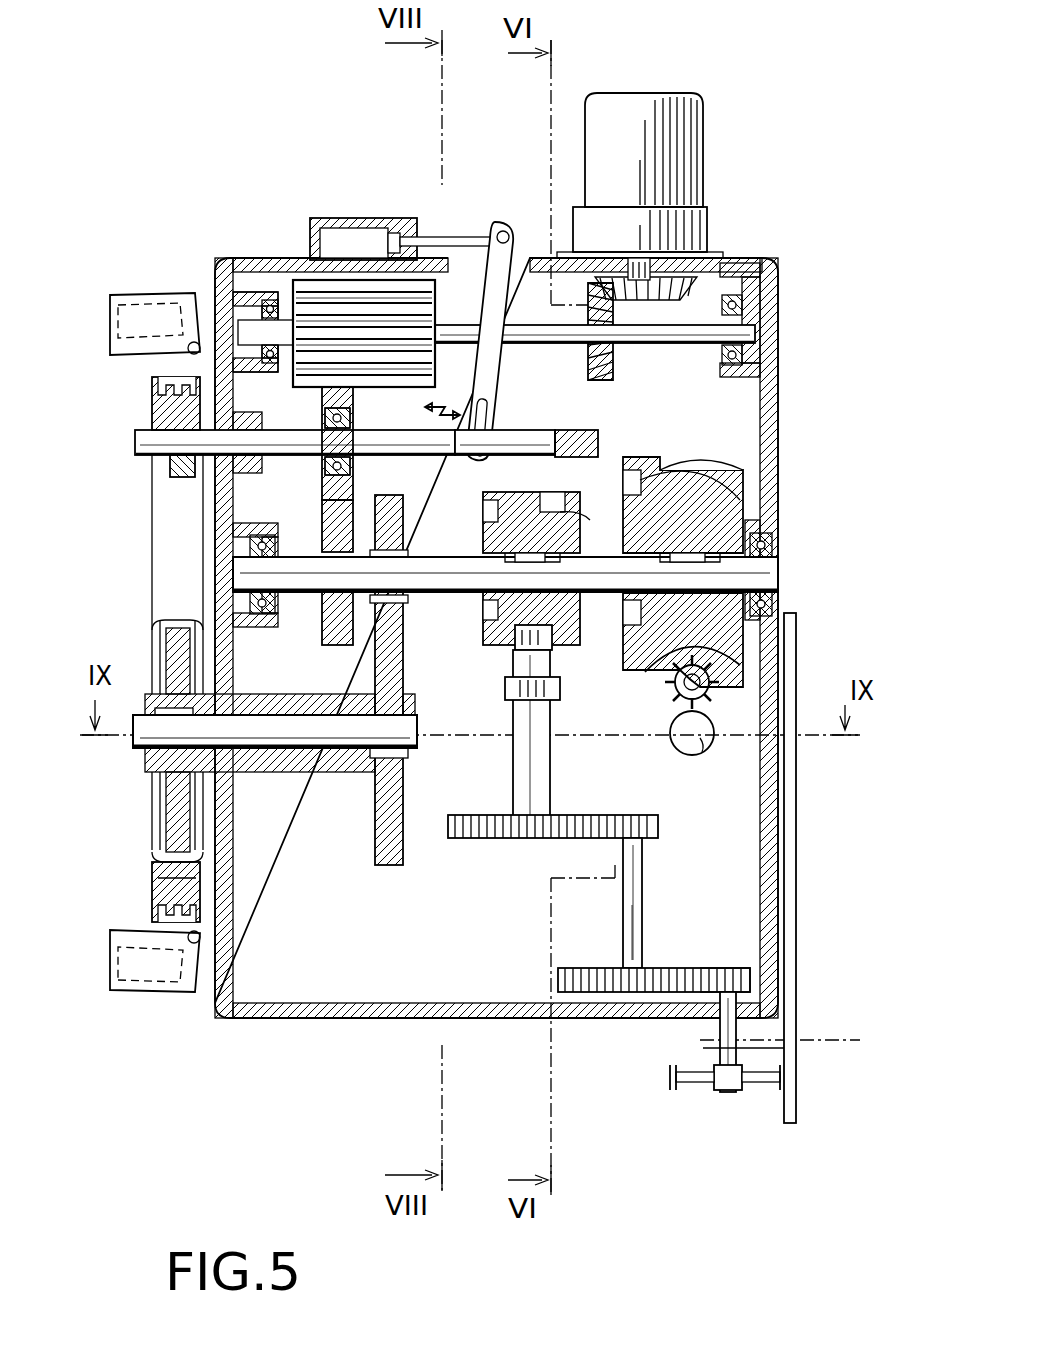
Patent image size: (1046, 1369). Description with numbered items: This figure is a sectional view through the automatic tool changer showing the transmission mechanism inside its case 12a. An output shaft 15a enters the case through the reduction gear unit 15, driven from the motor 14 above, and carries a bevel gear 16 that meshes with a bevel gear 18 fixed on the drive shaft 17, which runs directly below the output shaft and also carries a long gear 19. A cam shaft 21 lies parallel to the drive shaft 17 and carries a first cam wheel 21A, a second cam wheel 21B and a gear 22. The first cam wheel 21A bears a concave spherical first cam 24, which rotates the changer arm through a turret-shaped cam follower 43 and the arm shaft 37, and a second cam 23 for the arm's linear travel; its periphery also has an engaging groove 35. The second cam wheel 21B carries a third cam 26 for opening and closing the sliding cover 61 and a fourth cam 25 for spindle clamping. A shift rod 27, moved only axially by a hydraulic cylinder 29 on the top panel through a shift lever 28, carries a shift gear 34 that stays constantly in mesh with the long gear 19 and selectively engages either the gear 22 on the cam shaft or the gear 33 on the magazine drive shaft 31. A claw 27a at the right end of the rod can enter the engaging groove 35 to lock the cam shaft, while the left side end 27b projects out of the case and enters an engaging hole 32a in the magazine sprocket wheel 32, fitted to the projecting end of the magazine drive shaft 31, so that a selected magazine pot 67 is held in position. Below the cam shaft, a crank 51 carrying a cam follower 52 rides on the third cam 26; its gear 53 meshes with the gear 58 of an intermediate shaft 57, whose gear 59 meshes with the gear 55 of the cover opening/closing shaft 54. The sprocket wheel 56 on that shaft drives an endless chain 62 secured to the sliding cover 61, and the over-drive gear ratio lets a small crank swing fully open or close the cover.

The case 12a is at (772, 376).
The motor 14 is at (690, 115).
The reduction gear unit 15 is at (680, 215).
The output shaft 15a is at (600, 265).
The bevel gear 16 is at (690, 270).
The drive shaft 17 is at (750, 325).
The bevel gear 18 is at (590, 320).
The long gear 19 is at (318, 300).
The cam shaft 21 is at (750, 572).
The first cam wheel 21A is at (760, 520).
The second cam wheel 21B is at (590, 520).
The gear 22 is at (330, 620).
The second cam 23 is at (720, 525).
The first cam 24 is at (705, 458).
The fourth cam 25 is at (485, 630).
The third cam 26 is at (490, 500).
The shift rod 27 is at (532, 440).
The claw 27a is at (598, 452).
The left side end 27b is at (150, 445).
The shift lever 28 is at (502, 224).
The hydraulic cylinder 29 is at (360, 218).
The magazine drive shaft 31 is at (316, 745).
The magazine sprocket wheel 32 is at (155, 370).
The engaging hole 32a is at (180, 478).
The gear 33 is at (392, 842).
The shift gear 34 is at (330, 478).
The engaging groove 35 is at (650, 470).
The arm shaft 37 is at (695, 742).
The cam follower 43 is at (735, 690).
The crank 51 is at (512, 750).
The cam follower 52 is at (507, 655).
The gear 53 is at (540, 840).
The cover opening/closing shaft 54 is at (735, 1035).
The gear 55 is at (740, 975).
The sprocket wheel 56 is at (762, 1090).
The intermediate shaft 57 is at (642, 880).
The gear 58 is at (630, 808).
The gear 59 is at (600, 968).
The sliding cover 61 is at (797, 830).
The endless chain 62 is at (668, 1076).
The magazine pot 67 is at (168, 300).